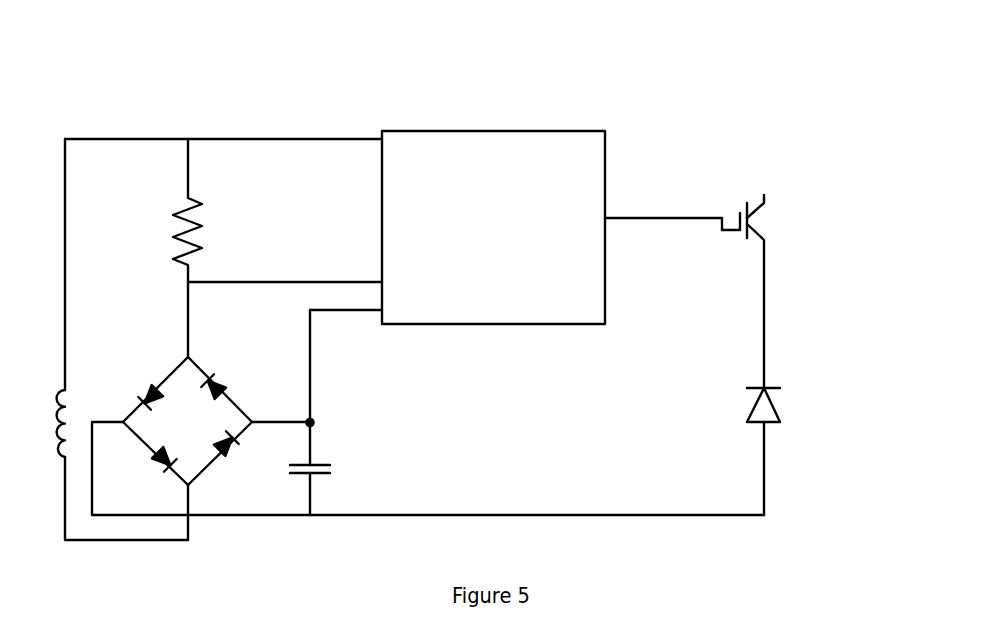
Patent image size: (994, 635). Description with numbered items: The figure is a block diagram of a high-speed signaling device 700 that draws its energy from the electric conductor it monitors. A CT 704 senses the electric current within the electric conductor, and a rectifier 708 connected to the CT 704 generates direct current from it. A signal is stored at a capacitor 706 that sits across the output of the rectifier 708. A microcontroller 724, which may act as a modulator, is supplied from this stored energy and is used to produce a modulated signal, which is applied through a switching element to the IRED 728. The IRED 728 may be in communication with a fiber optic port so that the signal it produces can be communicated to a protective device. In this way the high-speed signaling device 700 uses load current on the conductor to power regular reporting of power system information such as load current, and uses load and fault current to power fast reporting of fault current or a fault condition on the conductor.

The circuit 700 is at (92, 44).
The CT 704 is at (64, 457).
The capacitor 706 is at (330, 465).
The rectifier 708 is at (230, 394).
The microcontroller 724 is at (605, 131).
The IRED 728 is at (780, 422).